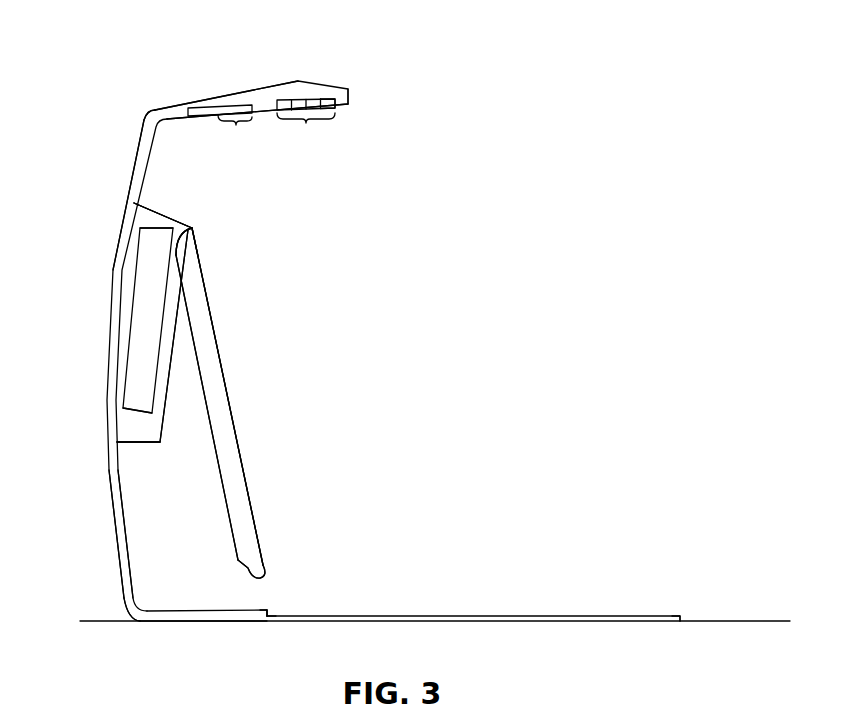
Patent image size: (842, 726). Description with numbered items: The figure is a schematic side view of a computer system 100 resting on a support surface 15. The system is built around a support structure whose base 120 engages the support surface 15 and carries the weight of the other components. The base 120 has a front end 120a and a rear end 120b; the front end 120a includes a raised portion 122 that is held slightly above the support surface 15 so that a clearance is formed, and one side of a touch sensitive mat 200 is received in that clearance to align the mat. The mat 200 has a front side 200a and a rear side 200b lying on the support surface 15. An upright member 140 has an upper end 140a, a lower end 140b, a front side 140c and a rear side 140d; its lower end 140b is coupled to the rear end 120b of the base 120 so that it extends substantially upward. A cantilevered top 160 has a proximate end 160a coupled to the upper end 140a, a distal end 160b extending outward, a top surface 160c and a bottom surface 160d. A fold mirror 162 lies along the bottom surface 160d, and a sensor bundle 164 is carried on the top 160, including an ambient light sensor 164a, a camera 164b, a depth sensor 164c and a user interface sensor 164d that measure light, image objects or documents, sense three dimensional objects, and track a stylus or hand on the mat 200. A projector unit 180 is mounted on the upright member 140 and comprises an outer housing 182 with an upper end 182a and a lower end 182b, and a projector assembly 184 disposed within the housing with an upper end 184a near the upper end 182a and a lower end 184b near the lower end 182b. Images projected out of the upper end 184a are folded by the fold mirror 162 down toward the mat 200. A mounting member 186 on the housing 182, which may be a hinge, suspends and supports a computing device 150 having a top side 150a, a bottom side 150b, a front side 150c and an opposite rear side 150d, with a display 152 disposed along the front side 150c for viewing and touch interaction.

The support surface 15 is at (725, 620).
The computer system 100 is at (524, 189).
The base 120 is at (222, 610).
The front end 120a is at (273, 614).
The rear end 120b is at (135, 624).
The raised portion 122 is at (271, 609).
The upright member 140 is at (106, 412).
The upper end 140a is at (143, 121).
The lower end 140b is at (129, 608).
The front side 140c is at (124, 522).
The rear side 140d is at (115, 518).
The computing device 150 is at (233, 320).
The top side 150a is at (195, 229).
The bottom side 150b is at (272, 568).
The front side 150c is at (224, 378).
The bar rear surface 150d is at (228, 496).
The display 152 is at (278, 396).
The top 160 is at (222, 61).
The proximate end 160a is at (151, 109).
The distal end 160b is at (352, 93).
The top surface 160c is at (200, 102).
The bottom surface 160d is at (178, 120).
The fold mirror 162 is at (230, 125).
The sensor bundle 164 is at (311, 82).
The ambient light sensor 164a is at (328, 99).
The camera 164b is at (313, 100).
The depth sensor 164c is at (299, 100).
The user interface sensor 164d is at (284, 100).
The projector unit 180 is at (109, 355).
The outer housing 182 is at (131, 329).
The upper end 182a is at (146, 199).
The lower end 182b is at (148, 446).
The projector assembly 184 is at (133, 300).
The upper end 184a is at (138, 225).
The lower end 184b is at (154, 418).
The mounting member 186 is at (181, 256).
The touch sensitive mat 200 is at (643, 613).
The front side 200a is at (682, 623).
The rear side 200b is at (267, 624).